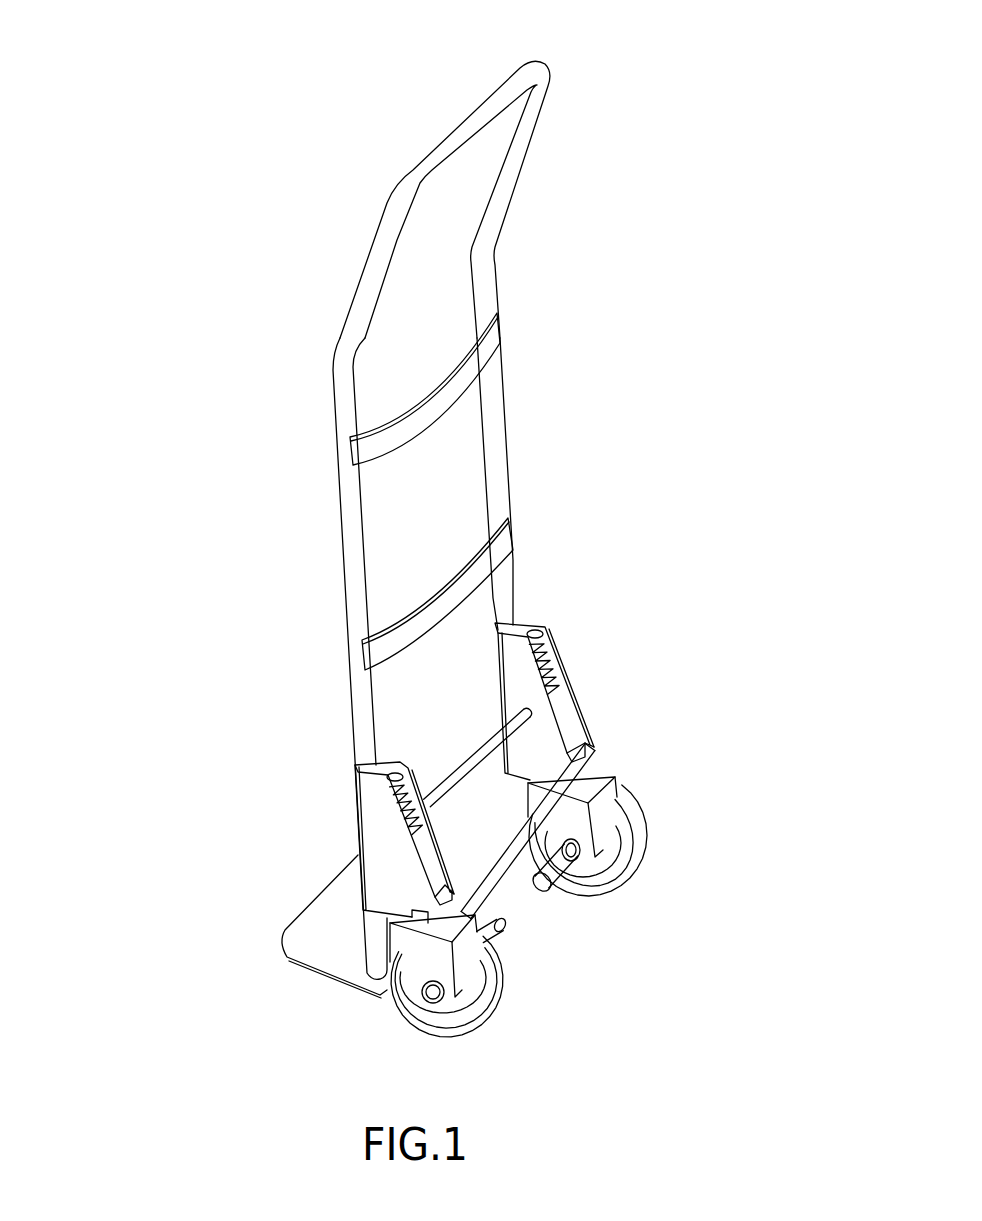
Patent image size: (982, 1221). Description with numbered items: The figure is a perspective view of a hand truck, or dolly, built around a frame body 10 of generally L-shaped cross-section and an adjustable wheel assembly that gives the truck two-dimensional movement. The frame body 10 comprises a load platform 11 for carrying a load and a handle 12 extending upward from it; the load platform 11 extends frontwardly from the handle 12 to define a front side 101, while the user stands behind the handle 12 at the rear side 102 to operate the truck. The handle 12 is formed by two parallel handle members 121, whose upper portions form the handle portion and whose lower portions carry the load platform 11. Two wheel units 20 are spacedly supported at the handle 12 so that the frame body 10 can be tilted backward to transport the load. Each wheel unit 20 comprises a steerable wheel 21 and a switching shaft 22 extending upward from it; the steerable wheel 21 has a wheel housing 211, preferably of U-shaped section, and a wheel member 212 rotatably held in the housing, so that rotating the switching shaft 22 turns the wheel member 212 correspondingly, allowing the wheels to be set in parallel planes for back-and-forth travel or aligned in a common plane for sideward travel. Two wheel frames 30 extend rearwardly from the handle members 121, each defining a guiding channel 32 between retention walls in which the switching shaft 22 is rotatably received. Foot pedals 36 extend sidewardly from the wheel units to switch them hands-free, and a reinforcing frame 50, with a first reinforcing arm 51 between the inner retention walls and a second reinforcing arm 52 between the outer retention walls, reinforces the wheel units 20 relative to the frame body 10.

The frame body 10 is at (160, 327).
The front side 101 is at (307, 428).
The rear side 102 is at (545, 413).
The handle 12 is at (633, 242).
The handle members 121 is at (352, 497).
The load platform 11 is at (300, 948).
The reinforcing frame 50 is at (582, 483).
The first reinforcing arm 51 is at (467, 737).
The second reinforcing arm 52 is at (592, 762).
The wheel units 20 is at (163, 857).
The steerable wheel 21 is at (760, 797).
The wheel housing 211 is at (597, 782).
The wheel member 212 is at (637, 857).
The switching shaft 22 is at (557, 665).
The wheel frames 30 is at (542, 732).
The guiding channel 32 is at (533, 615).
The foot pedals 36 is at (503, 940).